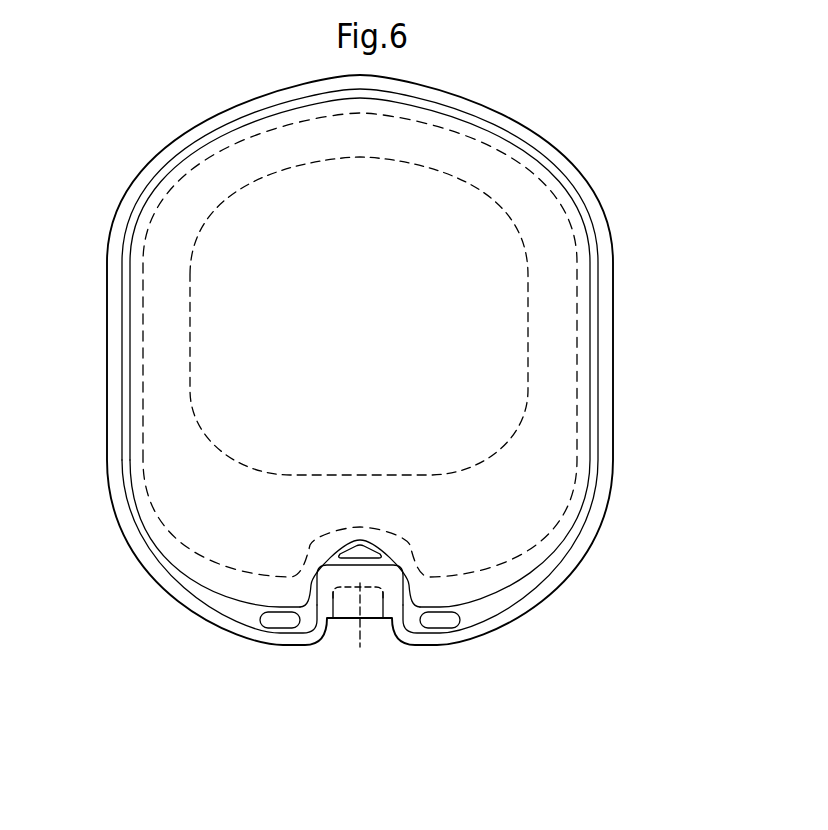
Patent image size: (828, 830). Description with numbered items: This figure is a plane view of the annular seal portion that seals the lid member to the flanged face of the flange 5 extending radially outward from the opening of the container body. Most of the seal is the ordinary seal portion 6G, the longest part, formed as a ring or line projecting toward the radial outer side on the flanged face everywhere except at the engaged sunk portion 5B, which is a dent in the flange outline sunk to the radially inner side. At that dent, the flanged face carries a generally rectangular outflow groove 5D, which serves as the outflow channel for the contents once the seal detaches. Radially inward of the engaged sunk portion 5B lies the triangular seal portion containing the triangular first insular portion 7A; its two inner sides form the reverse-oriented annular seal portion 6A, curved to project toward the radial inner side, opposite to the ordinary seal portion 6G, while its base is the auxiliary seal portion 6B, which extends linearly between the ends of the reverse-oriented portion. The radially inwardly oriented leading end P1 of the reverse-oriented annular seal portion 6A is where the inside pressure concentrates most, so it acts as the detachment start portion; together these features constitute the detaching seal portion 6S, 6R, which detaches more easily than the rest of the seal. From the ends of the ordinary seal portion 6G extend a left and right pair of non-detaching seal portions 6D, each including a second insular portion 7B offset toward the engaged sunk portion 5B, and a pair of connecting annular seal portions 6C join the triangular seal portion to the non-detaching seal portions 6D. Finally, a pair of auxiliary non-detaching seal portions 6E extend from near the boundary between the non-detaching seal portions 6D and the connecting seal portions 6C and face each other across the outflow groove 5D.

The flange 5 is at (580, 168).
The ordinary seal portion 6G is at (599, 360).
The reverse-oriented annular seal portion 6A is at (354, 539).
The auxiliary seal portion 6B is at (317, 582).
The first insular portion 7A is at (370, 545).
The leading end P1 is at (361, 536).
The detaching seal portion 6R is at (309, 520).
The detaching seal portion 6S is at (403, 535).
The connecting annular seal portion 6C is at (310, 592).
The second insular portion 7B is at (282, 618).
The non-detaching seal portion 6D is at (272, 649).
The engaged sunk portion 5B is at (312, 638).
The outflow groove 5D is at (358, 627).
The auxiliary non-detaching seal portion 6E is at (327, 622).